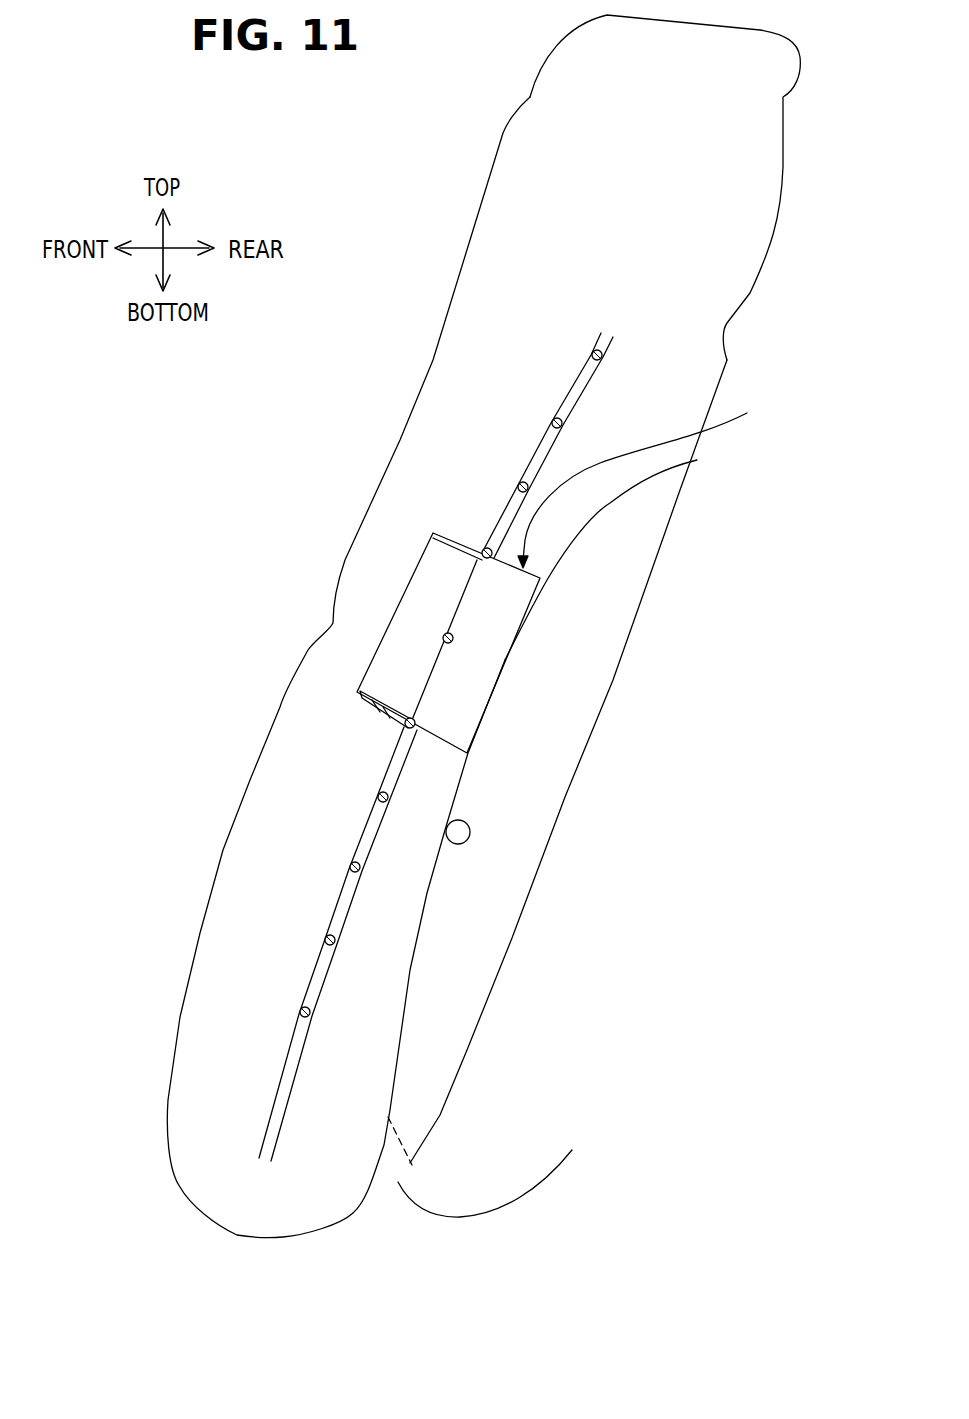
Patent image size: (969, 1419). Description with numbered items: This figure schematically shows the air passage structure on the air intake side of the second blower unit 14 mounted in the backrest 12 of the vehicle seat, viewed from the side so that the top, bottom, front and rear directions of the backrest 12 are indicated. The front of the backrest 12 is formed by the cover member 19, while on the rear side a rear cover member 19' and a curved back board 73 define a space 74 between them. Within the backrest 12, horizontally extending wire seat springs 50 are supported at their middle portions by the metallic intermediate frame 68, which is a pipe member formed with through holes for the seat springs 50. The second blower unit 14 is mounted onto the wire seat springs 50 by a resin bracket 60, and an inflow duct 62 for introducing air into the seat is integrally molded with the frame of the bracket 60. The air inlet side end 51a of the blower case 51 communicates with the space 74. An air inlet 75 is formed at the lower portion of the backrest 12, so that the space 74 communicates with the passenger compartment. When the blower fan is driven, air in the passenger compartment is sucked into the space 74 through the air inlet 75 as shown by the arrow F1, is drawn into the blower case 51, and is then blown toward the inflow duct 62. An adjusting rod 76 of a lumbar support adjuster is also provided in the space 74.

The backrest 12 is at (428, 293).
The second blower unit 14 is at (530, 553).
The cover member 19 is at (348, 667).
The rear cover member 19' is at (568, 761).
The wire seat springs 50 is at (521, 484).
The blower case 51 is at (652, 483).
The air inlet side end 51a is at (541, 584).
The bracket 60 is at (470, 549).
The inflow duct 62 is at (365, 698).
The intermediate frame 68 is at (573, 385).
The curved back board 73 is at (558, 567).
The space 74 is at (560, 702).
The air inlet 75 is at (398, 1176).
The adjusting rod 76 is at (470, 835).
The arrow F1 is at (512, 1205).